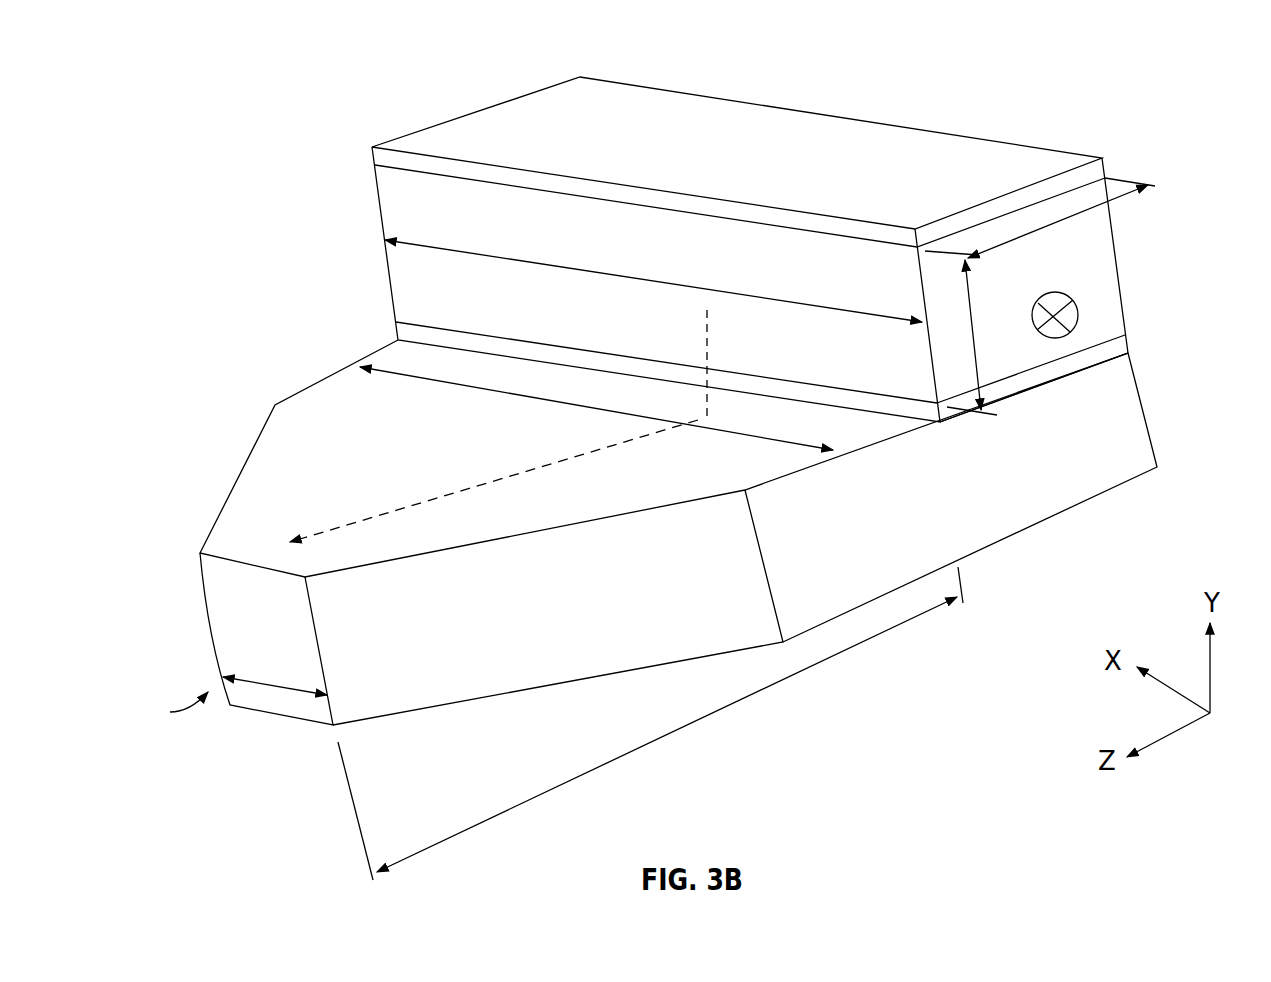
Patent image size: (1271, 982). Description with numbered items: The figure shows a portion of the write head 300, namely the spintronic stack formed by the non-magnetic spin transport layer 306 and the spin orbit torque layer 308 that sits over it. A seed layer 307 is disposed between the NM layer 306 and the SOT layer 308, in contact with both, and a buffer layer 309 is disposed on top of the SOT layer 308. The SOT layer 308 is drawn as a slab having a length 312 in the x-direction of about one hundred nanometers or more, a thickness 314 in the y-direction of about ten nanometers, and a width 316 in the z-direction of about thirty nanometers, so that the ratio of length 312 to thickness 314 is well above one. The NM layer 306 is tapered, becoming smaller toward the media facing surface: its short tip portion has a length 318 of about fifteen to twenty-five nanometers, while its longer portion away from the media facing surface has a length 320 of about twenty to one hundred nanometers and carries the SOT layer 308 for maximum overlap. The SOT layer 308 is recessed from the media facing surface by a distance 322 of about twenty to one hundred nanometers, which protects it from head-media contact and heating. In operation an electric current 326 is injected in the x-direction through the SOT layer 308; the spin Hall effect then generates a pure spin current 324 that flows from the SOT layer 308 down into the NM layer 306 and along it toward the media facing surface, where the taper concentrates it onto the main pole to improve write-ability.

The write head 300 is at (173, 68).
The non-magnetic spin transport layer 306 is at (631, 610).
The seed layer 307 is at (1072, 360).
The spin orbit torque layer 308 is at (787, 268).
The buffer layer 309 is at (737, 153).
The length of the SOT layer 312 is at (600, 273).
The thickness of the SOT layer 314 is at (978, 338).
The width of the SOT layer 316 is at (1118, 200).
The length of the tapered portion of the NM layer 318 is at (297, 693).
The length of the longer portion of the NM layer 320 is at (500, 393).
The recess distance 322 is at (547, 790).
The spin current 324 is at (407, 507).
The electric current 326 is at (1066, 280).